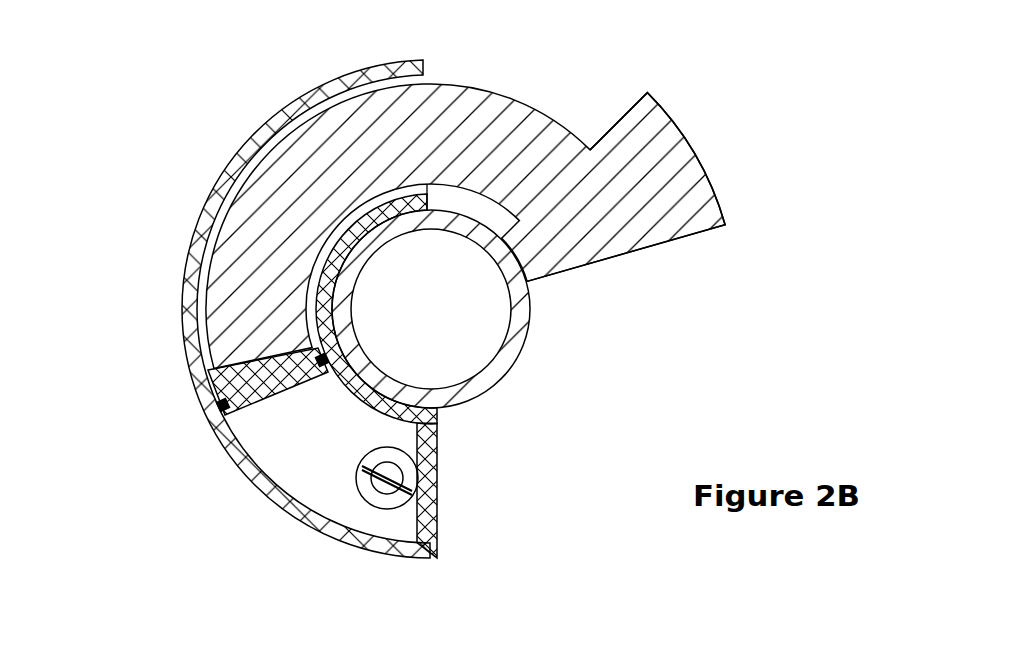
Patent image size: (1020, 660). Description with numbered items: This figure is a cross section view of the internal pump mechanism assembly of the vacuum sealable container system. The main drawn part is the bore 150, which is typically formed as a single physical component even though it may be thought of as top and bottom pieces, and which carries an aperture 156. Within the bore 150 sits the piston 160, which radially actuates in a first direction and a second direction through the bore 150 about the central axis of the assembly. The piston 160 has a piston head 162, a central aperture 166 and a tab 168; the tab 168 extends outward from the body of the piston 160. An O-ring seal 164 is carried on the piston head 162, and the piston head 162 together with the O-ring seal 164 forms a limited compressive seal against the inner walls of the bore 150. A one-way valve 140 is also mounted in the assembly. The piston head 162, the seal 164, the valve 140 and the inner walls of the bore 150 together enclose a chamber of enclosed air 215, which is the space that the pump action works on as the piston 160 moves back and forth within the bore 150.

The one-way valve 140 is at (409, 478).
The bore 150 is at (207, 225).
The aperture 156 is at (397, 508).
The piston 160 is at (493, 105).
The piston head 162 is at (218, 383).
The O-ring seal 164 is at (220, 406).
The central aperture 166 is at (514, 333).
The tab 168 is at (683, 158).
The chamber of enclosed air 215 is at (296, 453).